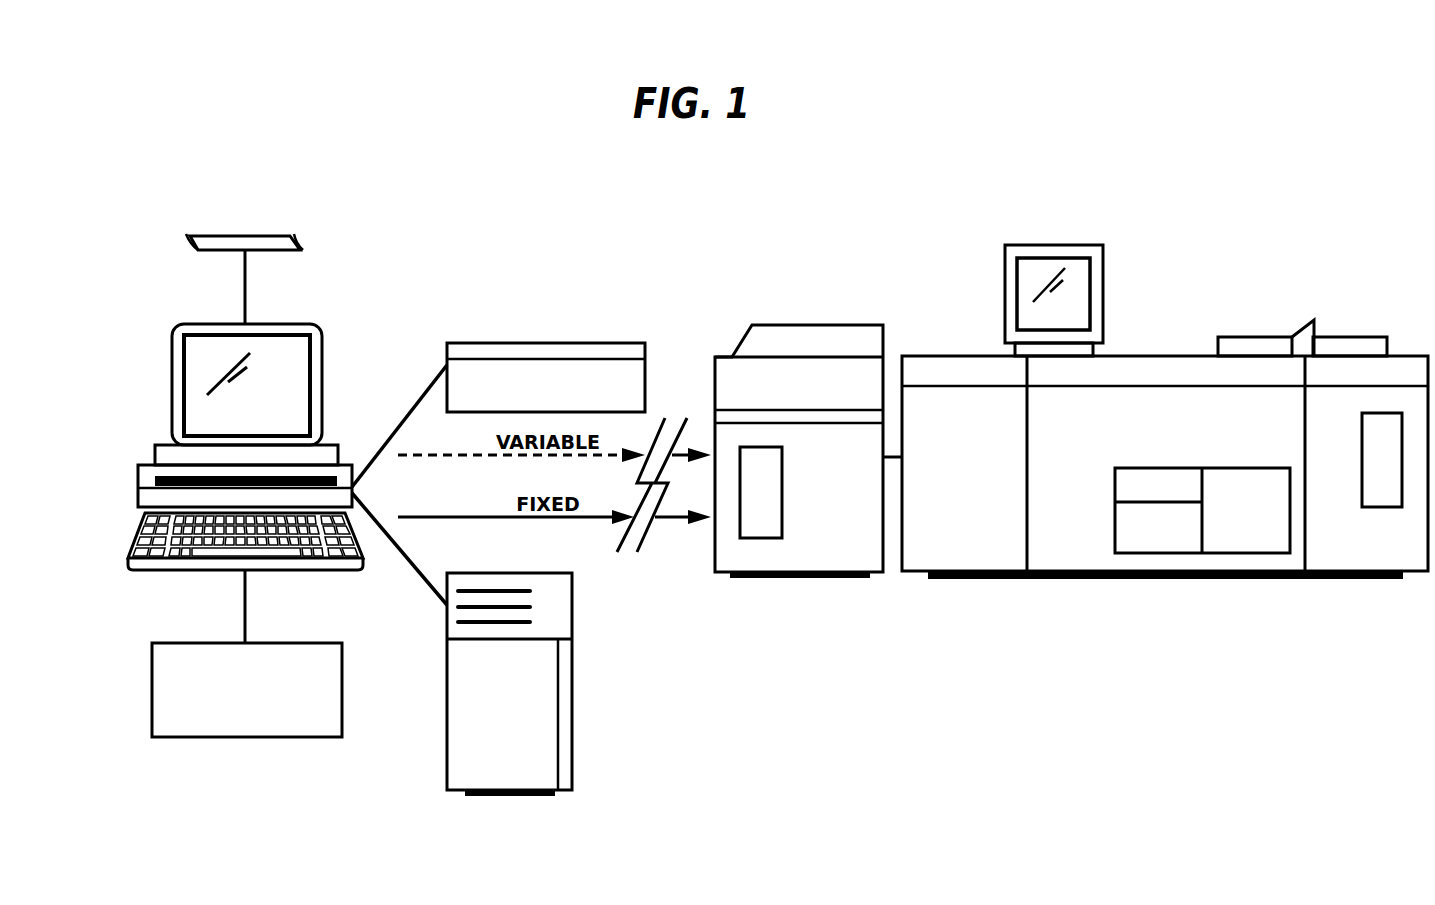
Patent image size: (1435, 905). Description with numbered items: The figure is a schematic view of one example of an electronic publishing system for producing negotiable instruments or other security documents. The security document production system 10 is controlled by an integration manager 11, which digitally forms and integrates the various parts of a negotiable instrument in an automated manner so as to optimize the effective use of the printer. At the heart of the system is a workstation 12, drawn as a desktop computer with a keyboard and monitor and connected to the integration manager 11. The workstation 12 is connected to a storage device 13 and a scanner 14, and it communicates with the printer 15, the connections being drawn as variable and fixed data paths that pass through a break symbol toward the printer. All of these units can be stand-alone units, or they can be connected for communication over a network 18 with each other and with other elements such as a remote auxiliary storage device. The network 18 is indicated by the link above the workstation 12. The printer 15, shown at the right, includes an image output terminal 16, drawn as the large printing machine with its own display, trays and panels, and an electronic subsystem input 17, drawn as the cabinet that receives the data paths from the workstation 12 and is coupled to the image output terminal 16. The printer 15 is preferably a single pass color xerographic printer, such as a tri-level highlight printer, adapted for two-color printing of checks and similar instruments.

The security document production system 10 is at (386, 168).
The integration manager 11 is at (150, 690).
The workstation 12 is at (282, 324).
The storage device 13 is at (447, 713).
The scanner 14 is at (545, 350).
The printer 15 is at (1218, 232).
The image output terminal 16 is at (1063, 548).
The electronic subsystem input 17 is at (806, 556).
The network 18 is at (262, 237).